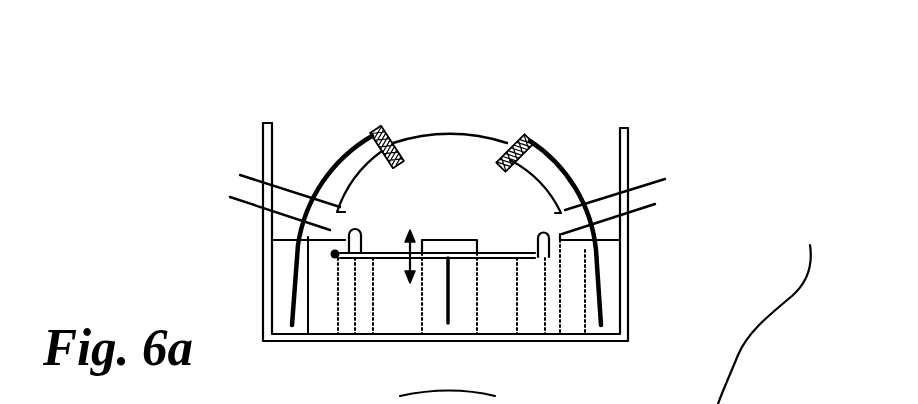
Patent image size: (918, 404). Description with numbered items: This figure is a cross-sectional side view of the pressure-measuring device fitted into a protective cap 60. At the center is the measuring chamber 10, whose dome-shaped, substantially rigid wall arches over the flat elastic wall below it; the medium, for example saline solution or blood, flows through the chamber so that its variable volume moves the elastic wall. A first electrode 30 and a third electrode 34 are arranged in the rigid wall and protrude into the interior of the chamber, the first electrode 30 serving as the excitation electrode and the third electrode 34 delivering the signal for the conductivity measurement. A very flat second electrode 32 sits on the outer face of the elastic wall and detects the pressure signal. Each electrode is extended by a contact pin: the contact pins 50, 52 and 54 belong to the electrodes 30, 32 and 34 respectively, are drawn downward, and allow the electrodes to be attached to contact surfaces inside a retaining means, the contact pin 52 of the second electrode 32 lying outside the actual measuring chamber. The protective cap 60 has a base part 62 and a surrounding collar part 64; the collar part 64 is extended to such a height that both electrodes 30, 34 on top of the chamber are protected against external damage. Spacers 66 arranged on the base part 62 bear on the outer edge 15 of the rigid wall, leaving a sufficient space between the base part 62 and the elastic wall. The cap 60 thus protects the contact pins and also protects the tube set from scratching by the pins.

The measuring chamber 10 is at (460, 152).
The outer edge 15 is at (333, 255).
The first electrode 30 is at (522, 135).
The second electrode 32 is at (442, 258).
The third electrode 34 is at (375, 127).
The contact pin 50 is at (573, 162).
The contact pin 52 is at (452, 297).
The contact pin 54 is at (333, 163).
The protective cap 60 is at (628, 243).
The base part 62 is at (345, 337).
The surrounding collar part 64 is at (628, 163).
The spacers 66 is at (345, 243).